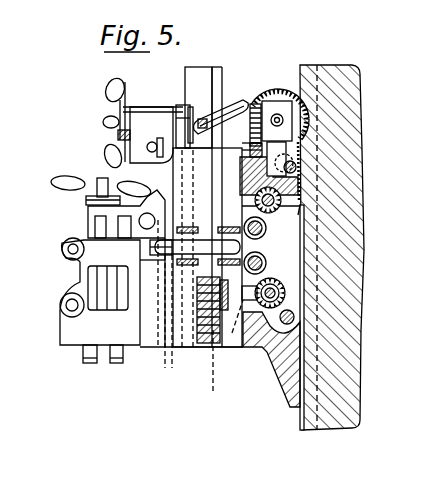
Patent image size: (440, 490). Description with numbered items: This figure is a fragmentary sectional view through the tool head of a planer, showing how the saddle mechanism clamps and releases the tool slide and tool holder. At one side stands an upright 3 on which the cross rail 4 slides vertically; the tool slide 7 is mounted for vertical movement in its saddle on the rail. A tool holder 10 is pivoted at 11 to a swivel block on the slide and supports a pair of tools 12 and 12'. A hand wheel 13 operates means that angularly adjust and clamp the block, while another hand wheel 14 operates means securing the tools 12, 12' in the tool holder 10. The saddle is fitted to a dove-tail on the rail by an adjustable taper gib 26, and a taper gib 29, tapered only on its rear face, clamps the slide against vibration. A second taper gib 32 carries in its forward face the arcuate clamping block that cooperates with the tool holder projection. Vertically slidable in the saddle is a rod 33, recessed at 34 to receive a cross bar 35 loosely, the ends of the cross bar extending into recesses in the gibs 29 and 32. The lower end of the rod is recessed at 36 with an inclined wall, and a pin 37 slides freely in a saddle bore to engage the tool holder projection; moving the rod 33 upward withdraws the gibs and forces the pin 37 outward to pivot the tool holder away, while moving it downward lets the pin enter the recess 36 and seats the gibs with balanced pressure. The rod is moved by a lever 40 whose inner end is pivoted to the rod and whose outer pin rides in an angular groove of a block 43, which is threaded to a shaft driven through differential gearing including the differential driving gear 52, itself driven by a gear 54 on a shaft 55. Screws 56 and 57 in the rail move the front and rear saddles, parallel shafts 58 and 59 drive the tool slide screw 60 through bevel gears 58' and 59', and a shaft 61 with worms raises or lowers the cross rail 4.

The upright 3 is at (346, 428).
The cross rail 4 is at (290, 387).
The tool slide 7 is at (221, 68).
The tool holder 10 is at (62, 300).
The pivot 11 is at (88, 225).
The tool 12 is at (66, 350).
The tool 12' is at (95, 367).
The hand wheel 13 is at (108, 88).
The hand wheel 14 is at (58, 184).
The adjustable taper gib 26 is at (248, 172).
The taper gib 29 is at (250, 212).
The taper gib 32 is at (124, 314).
The rod 33 is at (177, 128).
The recess 34 is at (256, 198).
The cross bar 35 is at (150, 248).
The recess 36 is at (201, 347).
The pin 37 is at (193, 319).
The lever 40 is at (232, 113).
The block 43 is at (287, 101).
The differential driving gear 52 is at (281, 102).
The gear 54 is at (272, 164).
The shaft 55 is at (297, 163).
The screw 56 is at (266, 265).
The screw 57 is at (266, 232).
The shaft 58 is at (316, 293).
The bevel gear 58' is at (242, 339).
The shaft 59 is at (345, 316).
The bevel gear 59' is at (345, 225).
The tool slide screw 60 is at (214, 366).
The shaft 61 is at (294, 318).